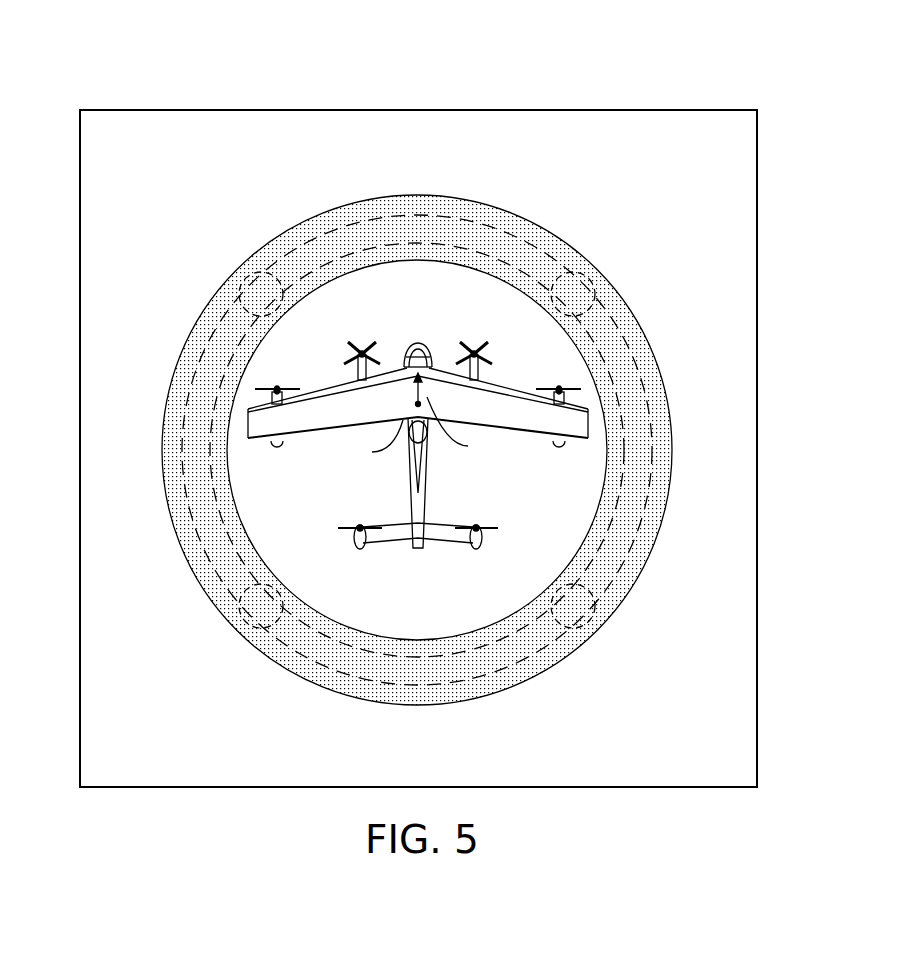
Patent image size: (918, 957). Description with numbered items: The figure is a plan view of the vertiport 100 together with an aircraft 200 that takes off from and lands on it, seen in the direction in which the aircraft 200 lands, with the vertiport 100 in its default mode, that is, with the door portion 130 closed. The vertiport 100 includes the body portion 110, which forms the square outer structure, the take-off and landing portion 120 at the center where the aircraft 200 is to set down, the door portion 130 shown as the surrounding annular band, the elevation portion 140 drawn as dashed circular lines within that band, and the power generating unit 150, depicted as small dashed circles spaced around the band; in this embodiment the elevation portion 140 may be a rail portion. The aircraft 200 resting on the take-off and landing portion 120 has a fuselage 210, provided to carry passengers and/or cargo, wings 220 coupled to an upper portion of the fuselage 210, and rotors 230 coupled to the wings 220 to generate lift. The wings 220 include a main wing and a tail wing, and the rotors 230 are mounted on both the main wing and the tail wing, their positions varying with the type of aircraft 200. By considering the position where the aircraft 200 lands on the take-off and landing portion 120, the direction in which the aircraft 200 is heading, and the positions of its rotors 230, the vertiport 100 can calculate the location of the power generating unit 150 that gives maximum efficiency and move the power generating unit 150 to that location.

The vertiport 100 is at (140, 109).
The body portion 110 is at (120, 208).
The take-off and landing portion 120 is at (270, 501).
The door portion 130 is at (193, 555).
The elevation portion 140 is at (195, 368).
The power generating unit 150 is at (232, 275).
The aircraft 200 is at (409, 340).
The fuselage 210 is at (424, 343).
The wings 220 is at (270, 424).
The rotors 230 is at (495, 522).